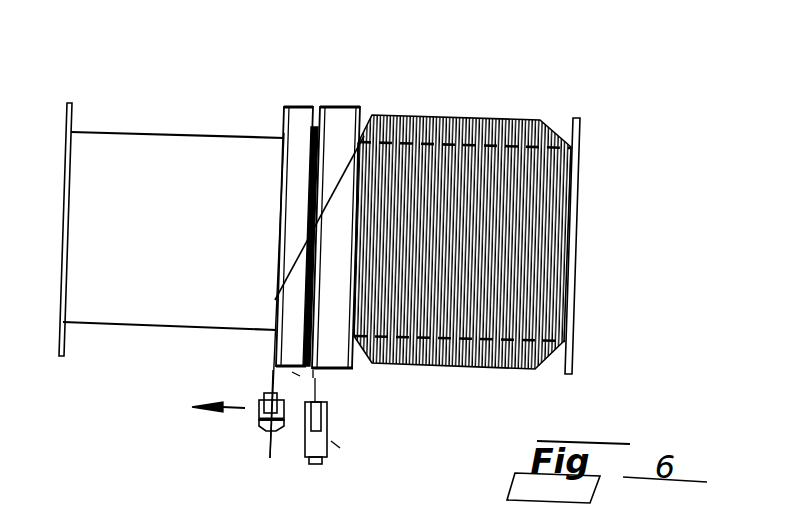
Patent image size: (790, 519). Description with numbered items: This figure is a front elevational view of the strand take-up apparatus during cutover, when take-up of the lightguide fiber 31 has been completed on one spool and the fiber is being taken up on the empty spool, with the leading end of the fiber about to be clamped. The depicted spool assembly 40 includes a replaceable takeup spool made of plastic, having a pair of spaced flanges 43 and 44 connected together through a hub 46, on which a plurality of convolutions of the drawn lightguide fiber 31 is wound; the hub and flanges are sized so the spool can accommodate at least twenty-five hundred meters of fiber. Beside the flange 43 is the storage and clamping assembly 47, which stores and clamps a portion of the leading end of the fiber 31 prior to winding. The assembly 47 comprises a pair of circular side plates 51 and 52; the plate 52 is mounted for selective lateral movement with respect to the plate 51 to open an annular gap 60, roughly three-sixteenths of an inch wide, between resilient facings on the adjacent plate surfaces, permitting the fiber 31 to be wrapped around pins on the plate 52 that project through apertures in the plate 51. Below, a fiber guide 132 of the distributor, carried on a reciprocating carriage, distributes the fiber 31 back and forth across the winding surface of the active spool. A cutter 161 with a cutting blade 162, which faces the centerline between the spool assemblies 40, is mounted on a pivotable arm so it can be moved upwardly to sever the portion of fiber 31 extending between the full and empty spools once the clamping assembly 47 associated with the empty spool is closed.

The spool assembly 40 is at (194, 113).
The flange 44 is at (72, 104).
The hub 46 is at (133, 131).
The flange 43 is at (285, 108).
The storage and clamping assembly 47 is at (295, 104).
The side plate 51 is at (314, 125).
The side plate 52 is at (312, 378).
The annular gap 60 is at (292, 372).
The fiber guide 132 is at (264, 397).
The lightguide fiber 31 is at (269, 452).
The cutting blade 162 is at (317, 392).
The cutter 161 is at (340, 448).